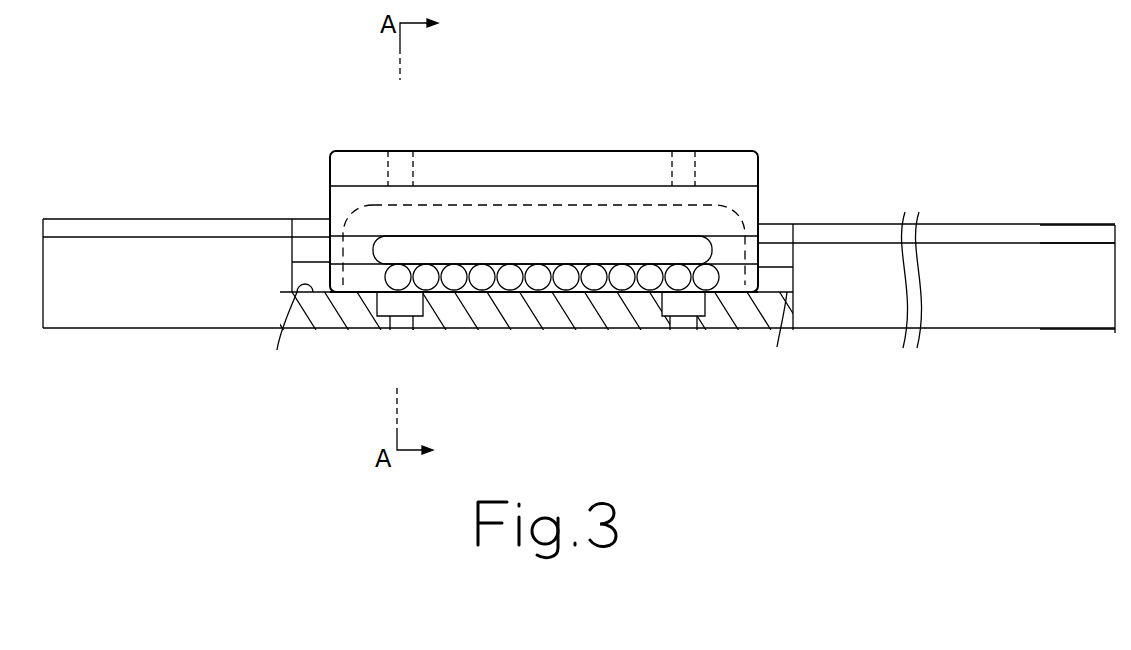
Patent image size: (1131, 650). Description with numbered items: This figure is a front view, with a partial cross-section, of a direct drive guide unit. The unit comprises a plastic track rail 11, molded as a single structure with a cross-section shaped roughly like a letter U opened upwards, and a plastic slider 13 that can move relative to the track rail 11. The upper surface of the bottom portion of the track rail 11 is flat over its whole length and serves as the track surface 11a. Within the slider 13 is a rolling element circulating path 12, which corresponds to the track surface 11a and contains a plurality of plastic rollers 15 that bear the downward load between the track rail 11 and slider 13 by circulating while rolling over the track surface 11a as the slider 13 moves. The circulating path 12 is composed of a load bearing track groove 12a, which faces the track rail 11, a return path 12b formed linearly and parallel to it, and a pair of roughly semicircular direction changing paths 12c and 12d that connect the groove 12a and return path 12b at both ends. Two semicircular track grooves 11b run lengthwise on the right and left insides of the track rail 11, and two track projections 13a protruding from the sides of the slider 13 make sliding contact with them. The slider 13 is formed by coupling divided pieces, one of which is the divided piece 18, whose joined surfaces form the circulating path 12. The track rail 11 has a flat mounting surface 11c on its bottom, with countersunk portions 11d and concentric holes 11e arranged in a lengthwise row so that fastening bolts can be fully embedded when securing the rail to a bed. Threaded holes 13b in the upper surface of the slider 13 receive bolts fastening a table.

The track rail 11 is at (136, 220).
The track surface 11a is at (298, 330).
The track grooves 11b is at (768, 245).
The mounting surface 11c is at (1015, 333).
The countersunk portions 11d is at (420, 303).
The holes 11e is at (397, 330).
The rolling element circulating path 12 is at (568, 204).
The load bearing track groove 12a is at (580, 268).
The return path 12b is at (493, 210).
The direction changing path 12c is at (350, 215).
The direction changing path 12d is at (728, 218).
The slider 13 is at (353, 145).
The track projections 13a is at (737, 292).
The threaded holes 13b is at (414, 168).
The rollers 15 is at (532, 292).
The divided piece 18 is at (462, 150).